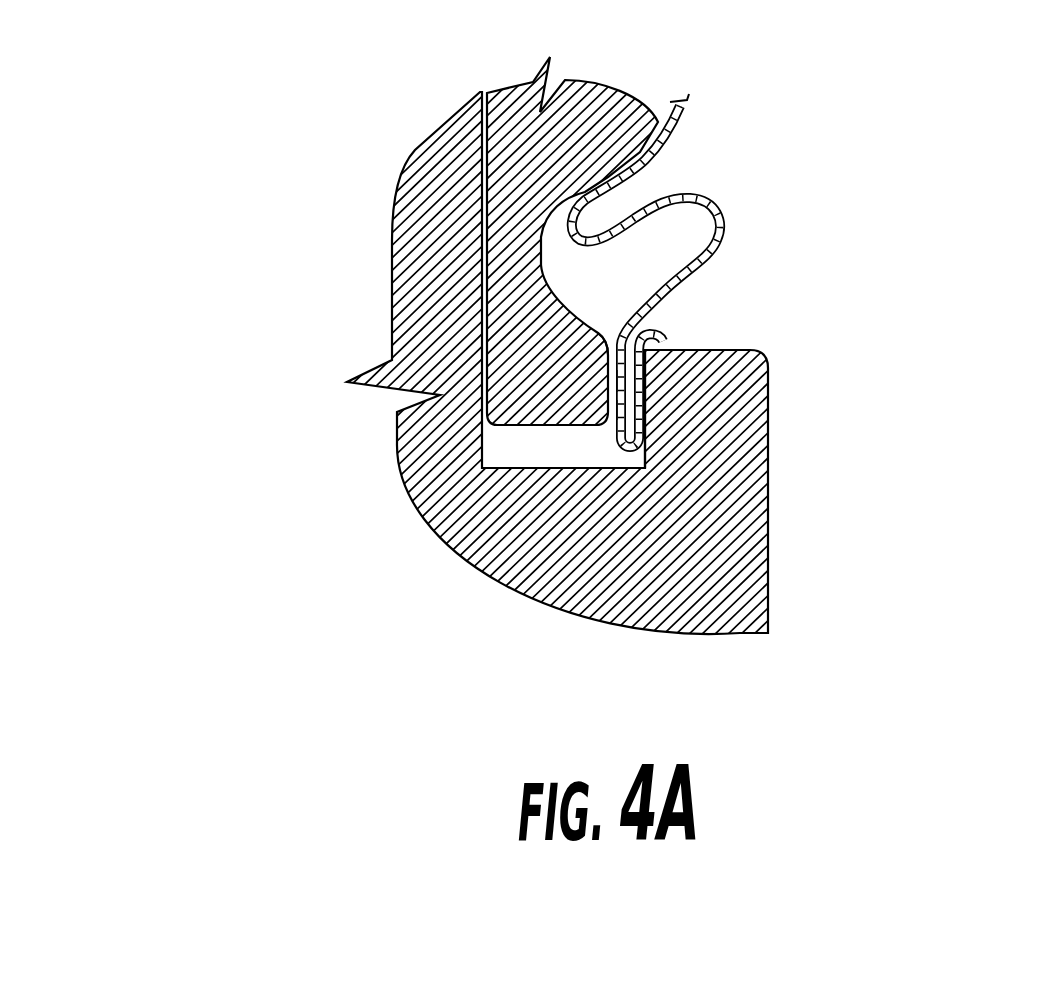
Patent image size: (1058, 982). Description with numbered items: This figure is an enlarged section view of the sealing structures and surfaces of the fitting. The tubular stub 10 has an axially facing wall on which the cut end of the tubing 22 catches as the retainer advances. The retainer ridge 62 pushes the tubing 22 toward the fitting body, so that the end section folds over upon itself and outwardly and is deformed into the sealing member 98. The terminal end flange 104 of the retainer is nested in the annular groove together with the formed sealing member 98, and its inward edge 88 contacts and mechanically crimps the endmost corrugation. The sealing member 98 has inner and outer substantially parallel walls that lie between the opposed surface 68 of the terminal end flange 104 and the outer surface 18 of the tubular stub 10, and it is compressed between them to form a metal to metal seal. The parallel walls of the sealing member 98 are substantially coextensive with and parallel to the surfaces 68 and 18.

The tubular stub 10 is at (732, 434).
The outer surface of the tubular stub 18 is at (647, 397).
The tubing 22 is at (702, 198).
The retainer ridge 62 is at (562, 178).
The opposed surface of retainer 68 is at (614, 380).
The inward edge 88 is at (614, 410).
The sealing member 98 is at (607, 355).
The terminal end flange 104 is at (580, 353).